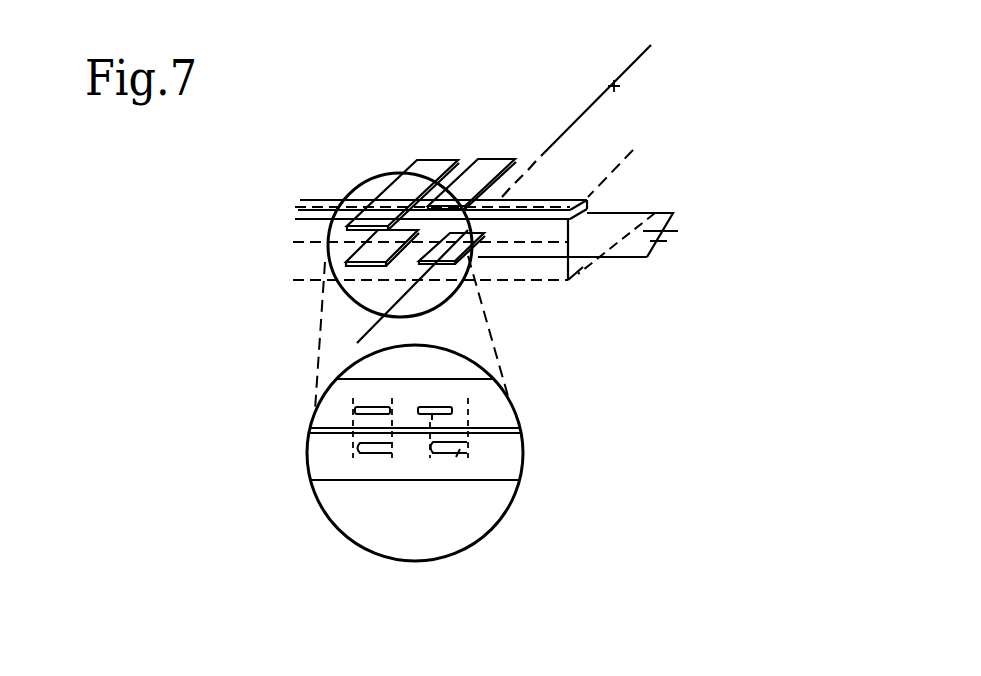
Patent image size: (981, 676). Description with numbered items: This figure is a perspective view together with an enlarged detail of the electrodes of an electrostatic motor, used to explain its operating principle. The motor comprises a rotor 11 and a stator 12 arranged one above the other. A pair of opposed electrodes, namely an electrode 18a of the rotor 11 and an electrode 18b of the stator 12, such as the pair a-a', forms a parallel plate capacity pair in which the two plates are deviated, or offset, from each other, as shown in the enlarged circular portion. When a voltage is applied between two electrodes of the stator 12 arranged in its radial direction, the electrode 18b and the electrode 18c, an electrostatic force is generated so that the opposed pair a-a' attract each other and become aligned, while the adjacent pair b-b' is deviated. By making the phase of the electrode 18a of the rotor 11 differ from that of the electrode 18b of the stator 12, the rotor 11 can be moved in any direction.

The rotor 11 is at (298, 220).
The stator 12 is at (313, 266).
The electrode of the rotor 18a is at (462, 187).
The electrode of the stator 18b is at (408, 231).
The electrode of the stator 18c is at (537, 200).